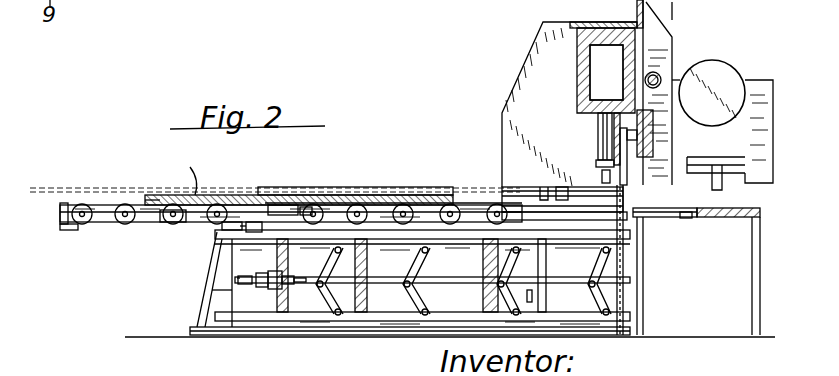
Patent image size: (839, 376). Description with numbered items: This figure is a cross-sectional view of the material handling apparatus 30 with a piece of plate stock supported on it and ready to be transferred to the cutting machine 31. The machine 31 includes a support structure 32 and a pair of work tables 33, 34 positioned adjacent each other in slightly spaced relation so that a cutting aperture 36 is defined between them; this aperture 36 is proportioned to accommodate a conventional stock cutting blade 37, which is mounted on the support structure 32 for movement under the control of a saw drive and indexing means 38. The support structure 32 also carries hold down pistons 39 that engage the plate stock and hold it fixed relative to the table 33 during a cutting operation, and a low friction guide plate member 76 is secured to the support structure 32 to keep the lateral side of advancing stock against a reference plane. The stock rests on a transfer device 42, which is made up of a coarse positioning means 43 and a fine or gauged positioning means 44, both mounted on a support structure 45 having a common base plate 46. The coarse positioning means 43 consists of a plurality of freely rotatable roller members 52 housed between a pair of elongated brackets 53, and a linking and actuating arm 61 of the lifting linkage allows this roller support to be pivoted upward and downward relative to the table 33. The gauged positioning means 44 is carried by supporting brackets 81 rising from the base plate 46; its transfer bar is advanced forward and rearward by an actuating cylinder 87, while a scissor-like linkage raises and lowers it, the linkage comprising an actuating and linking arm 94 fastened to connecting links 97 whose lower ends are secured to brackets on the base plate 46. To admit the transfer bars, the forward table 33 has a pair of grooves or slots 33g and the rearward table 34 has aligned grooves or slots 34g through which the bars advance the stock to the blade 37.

The material handling apparatus 30 is at (456, 166).
The machine 31 is at (664, 42).
The support structure 32 is at (563, 67).
The work table 33 is at (535, 190).
The grooves or slots 33g is at (558, 190).
The work table 34 is at (766, 211).
The grooves or slots 34g is at (684, 215).
The cutting aperture 36 is at (630, 222).
The stock cutting blade 37 is at (657, 145).
The saw drive and indexing means 38 is at (765, 80).
The hold down pistons 39 is at (601, 140).
The transfer device 42 is at (128, 183).
The coarse positioning means 43 is at (108, 230).
The fine or gauged positioning means 44 is at (198, 276).
The support structure 45 is at (262, 306).
The base plate 46 is at (335, 339).
The roller members 52 is at (70, 228).
The elongated brackets 53 is at (142, 227).
The linking and actuating arm 61 is at (540, 298).
The low friction guide plate member 76 is at (385, 184).
The supporting brackets 81 is at (410, 350).
The actuating cylinder 87 is at (287, 195).
The actuating and linking arm 94 is at (392, 286).
The connecting links 97 is at (425, 305).